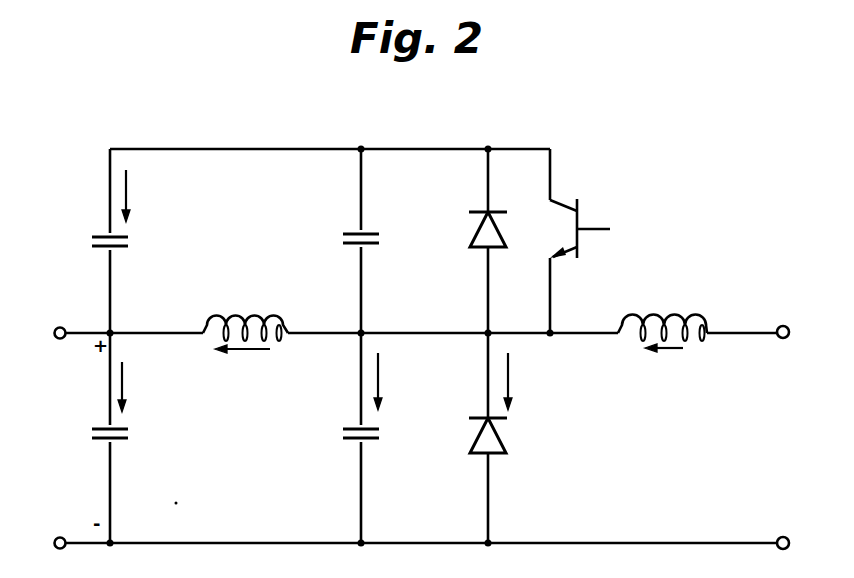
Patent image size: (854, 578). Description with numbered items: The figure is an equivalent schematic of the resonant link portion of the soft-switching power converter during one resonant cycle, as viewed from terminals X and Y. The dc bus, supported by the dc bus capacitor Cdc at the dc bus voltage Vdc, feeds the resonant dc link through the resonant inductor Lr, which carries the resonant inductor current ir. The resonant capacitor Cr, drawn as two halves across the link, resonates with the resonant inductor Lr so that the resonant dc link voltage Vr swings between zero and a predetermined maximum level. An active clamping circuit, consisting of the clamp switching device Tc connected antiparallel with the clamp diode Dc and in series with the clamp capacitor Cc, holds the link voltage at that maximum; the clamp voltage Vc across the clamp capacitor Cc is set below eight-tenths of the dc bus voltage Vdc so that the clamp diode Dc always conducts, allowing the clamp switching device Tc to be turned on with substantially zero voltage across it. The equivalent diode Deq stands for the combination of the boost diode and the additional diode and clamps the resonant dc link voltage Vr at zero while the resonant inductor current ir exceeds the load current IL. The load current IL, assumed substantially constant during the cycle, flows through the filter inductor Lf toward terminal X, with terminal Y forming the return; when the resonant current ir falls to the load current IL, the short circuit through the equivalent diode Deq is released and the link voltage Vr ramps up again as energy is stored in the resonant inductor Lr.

The clamp capacitor Cc is at (100, 223).
The clamp voltage Vc is at (139, 196).
The dc bus capacitor Cdc is at (97, 420).
The dc bus voltage Vdc is at (141, 387).
The resonant inductor Lr is at (245, 309).
The resonant inductor current ir is at (242, 364).
The resonant capacitor Cr is at (334, 242).
The resonant dc link voltage Vr is at (457, 381).
The clamp diode Dc is at (467, 226).
The equivalent diode Deq is at (467, 432).
The clamp switching device Tc is at (580, 225).
The filter inductor Lf is at (662, 309).
The load current IL is at (664, 367).
The terminal X is at (796, 333).
The terminal Y is at (796, 543).